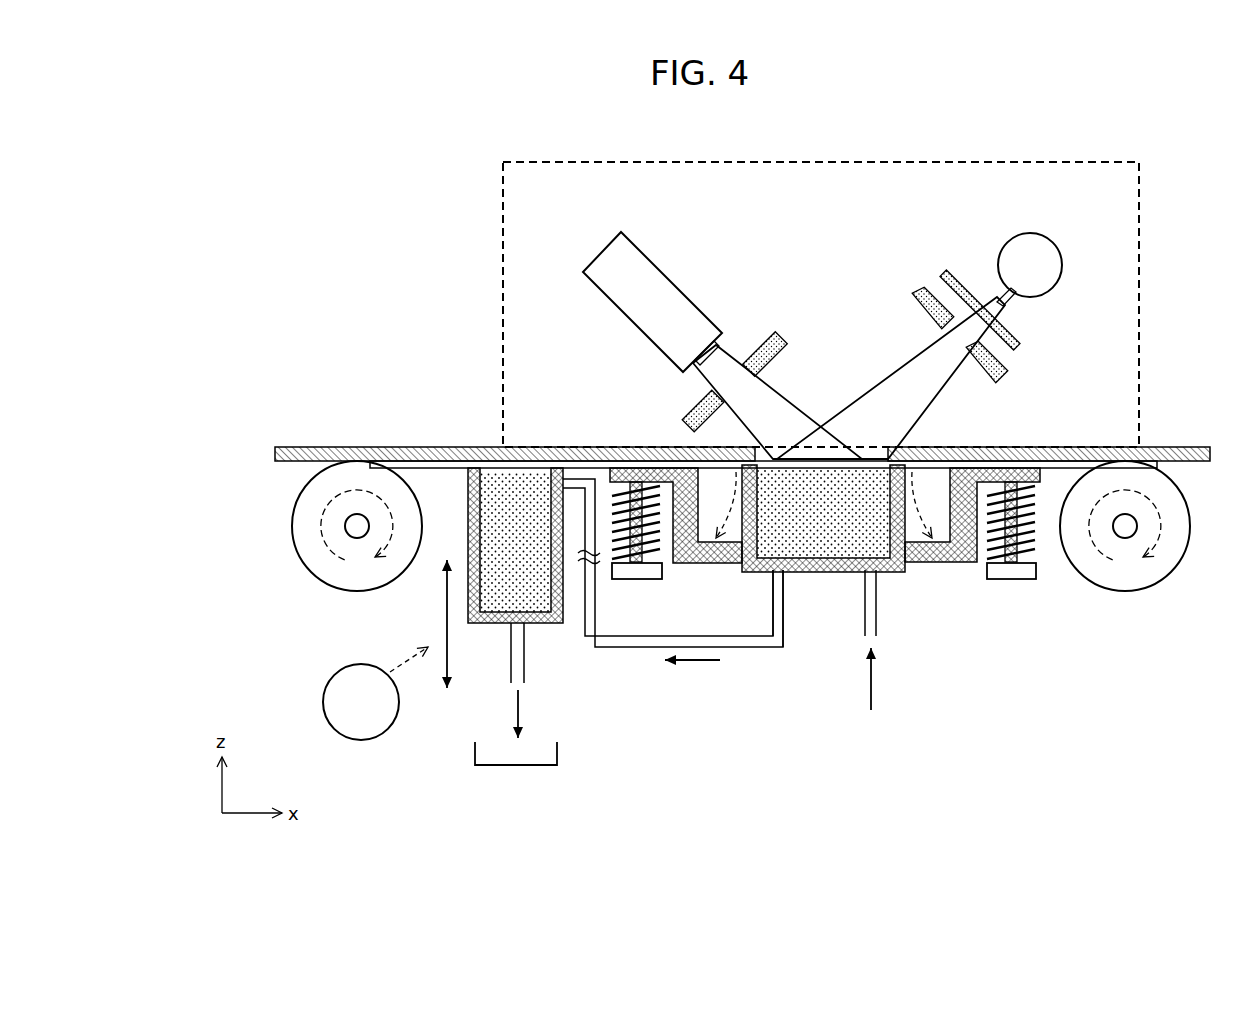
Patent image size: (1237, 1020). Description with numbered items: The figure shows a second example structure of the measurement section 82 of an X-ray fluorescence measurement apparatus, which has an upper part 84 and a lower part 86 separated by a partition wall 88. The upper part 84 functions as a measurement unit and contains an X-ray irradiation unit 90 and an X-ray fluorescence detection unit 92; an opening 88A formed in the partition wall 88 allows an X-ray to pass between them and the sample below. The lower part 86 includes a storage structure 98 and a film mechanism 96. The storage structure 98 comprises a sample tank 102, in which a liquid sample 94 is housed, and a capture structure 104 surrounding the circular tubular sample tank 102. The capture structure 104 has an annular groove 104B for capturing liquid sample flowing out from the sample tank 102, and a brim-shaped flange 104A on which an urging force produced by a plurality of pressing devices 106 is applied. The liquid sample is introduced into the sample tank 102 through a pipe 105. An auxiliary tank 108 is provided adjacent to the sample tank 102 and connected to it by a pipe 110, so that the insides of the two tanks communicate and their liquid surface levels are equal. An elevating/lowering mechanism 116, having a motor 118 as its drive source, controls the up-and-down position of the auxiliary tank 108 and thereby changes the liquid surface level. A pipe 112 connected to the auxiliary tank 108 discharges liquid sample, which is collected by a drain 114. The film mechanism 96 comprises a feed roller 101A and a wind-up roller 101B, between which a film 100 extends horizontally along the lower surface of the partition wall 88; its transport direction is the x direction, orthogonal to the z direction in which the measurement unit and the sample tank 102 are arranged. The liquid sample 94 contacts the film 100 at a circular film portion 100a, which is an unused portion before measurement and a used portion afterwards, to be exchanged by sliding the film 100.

The measurement section 82 is at (853, 96).
The upper part 84 is at (322, 302).
The lower part 86 is at (318, 618).
The partition wall 88 is at (432, 447).
The opening 88A is at (870, 459).
The X-ray irradiation unit 90 is at (980, 397).
The X-ray fluorescence detection unit 92 is at (645, 405).
The liquid sample 94 is at (833, 528).
The film mechanism 96 is at (265, 494).
The storage structure 98 is at (958, 621).
The film 100 is at (1052, 468).
The film portion 100a is at (820, 461).
The feed roller 101A is at (304, 547).
The wind-up roller 101B is at (1162, 577).
The sample tank 102 is at (810, 573).
The capture structure 104 is at (922, 573).
The flange 104A is at (992, 462).
The annular groove 104B is at (729, 522).
The pipe 105 is at (882, 603).
The pressing devices 106 is at (1020, 583).
The auxiliary tank 108 is at (535, 625).
The pipe 110 is at (753, 650).
The pipe 112 is at (525, 660).
The drain 114 is at (558, 753).
The elevating/lowering mechanism 116 is at (430, 626).
The motor 118 is at (400, 718).